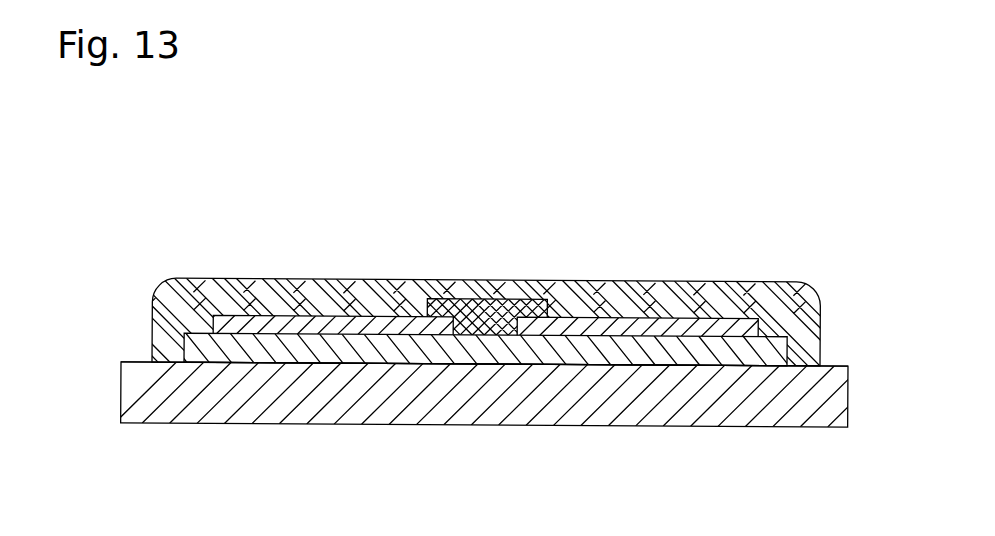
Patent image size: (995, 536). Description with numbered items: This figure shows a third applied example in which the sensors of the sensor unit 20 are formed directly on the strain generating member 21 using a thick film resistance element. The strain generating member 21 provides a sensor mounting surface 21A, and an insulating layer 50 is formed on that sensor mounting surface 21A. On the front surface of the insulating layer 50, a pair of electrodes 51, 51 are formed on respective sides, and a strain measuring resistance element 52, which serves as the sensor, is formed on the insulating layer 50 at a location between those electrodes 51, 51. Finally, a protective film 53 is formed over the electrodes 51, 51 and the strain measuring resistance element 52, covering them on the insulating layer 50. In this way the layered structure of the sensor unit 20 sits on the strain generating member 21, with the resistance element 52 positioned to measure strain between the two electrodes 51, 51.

The sensor unit 20 is at (466, 261).
The strain generating member 21 is at (142, 414).
The sensor mounting surface 21A is at (138, 360).
The insulating layer 50 is at (777, 348).
The electrode 51 is at (320, 317).
The strain measuring resistance element 52 is at (483, 312).
The protective film 53 is at (575, 293).